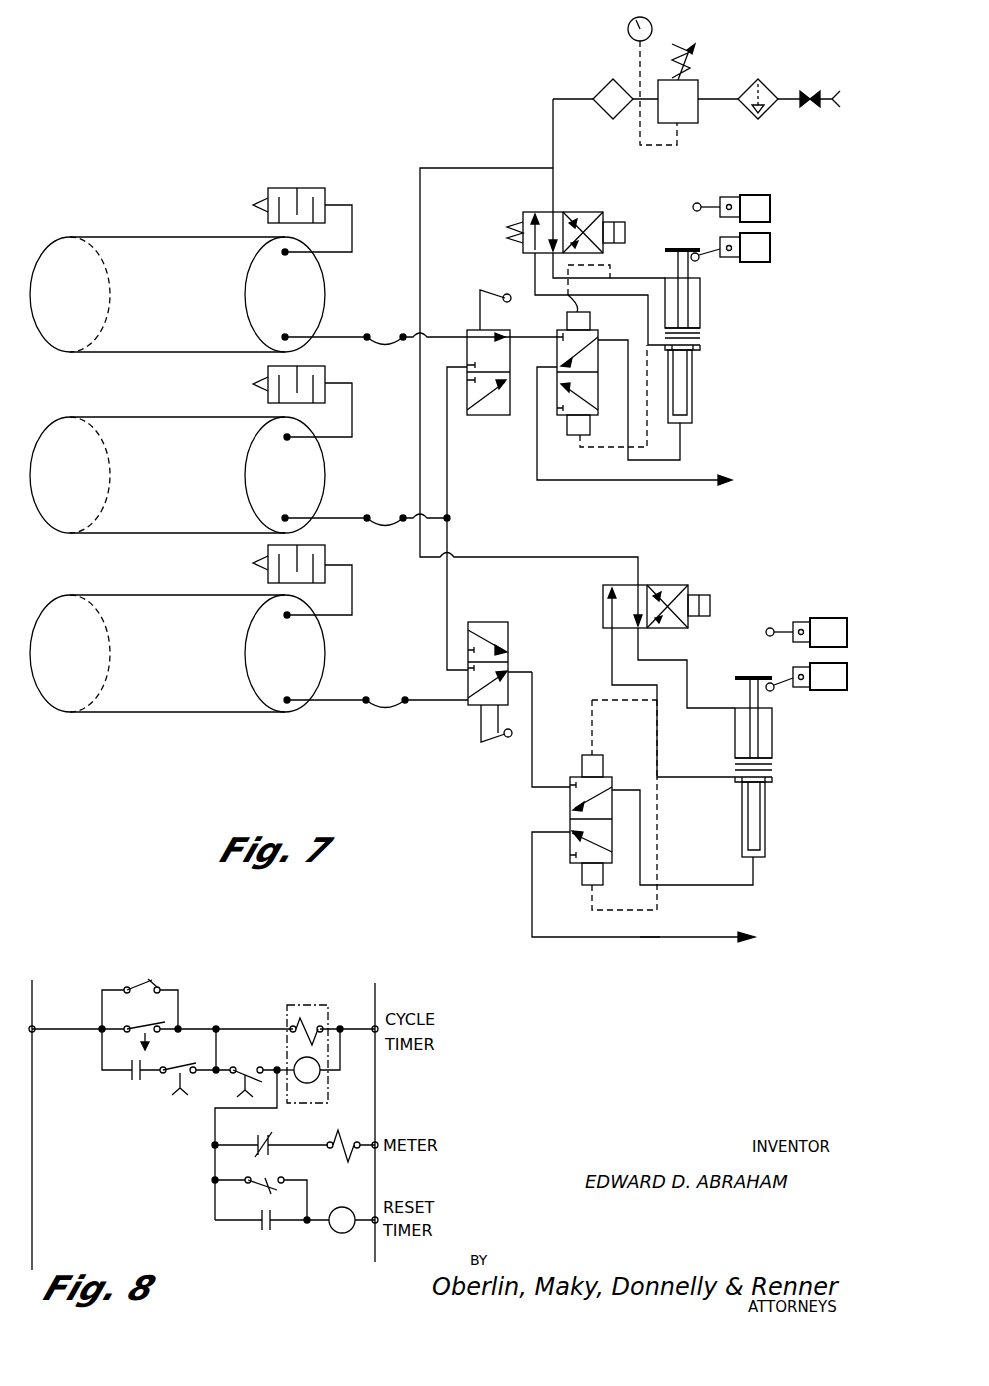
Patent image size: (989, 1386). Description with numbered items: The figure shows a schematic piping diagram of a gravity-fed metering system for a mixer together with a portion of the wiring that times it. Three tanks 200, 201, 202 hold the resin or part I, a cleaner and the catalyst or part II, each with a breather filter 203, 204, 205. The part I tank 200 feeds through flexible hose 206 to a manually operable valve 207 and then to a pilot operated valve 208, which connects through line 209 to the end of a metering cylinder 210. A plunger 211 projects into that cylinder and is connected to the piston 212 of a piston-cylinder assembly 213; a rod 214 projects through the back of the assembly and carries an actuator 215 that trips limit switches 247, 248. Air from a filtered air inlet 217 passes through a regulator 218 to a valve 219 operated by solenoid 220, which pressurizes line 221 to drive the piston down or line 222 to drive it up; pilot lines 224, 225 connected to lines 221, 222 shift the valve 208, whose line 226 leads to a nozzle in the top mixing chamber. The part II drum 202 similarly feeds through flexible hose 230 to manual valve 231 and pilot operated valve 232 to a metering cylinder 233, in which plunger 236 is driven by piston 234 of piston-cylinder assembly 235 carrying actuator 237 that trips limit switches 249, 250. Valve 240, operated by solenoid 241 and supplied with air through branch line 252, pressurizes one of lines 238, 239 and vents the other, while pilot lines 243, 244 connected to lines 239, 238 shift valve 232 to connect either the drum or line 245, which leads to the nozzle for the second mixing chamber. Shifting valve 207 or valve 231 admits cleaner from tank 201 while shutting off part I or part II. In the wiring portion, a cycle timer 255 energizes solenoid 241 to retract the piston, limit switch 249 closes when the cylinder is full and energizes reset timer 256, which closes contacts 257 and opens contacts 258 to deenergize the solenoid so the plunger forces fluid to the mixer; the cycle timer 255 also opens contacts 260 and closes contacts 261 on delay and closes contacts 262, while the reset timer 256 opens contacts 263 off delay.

In FIG. 7, the tank 200 is at (135, 237).
In FIG. 7, the tank 201 is at (160, 417).
In FIG. 7, the tank 202 is at (143, 595).
In FIG. 7, the breather filter 203 is at (318, 188).
In FIG. 7, the breather filter 204 is at (310, 366).
In FIG. 7, the breather filter 205 is at (318, 545).
In FIG. 7, the flexible hose 206 is at (380, 330).
In FIG. 7, the manually operable valve 207 is at (487, 415).
In FIG. 7, the pilot operated valve 208 is at (615, 318).
In FIG. 7, the line 209 is at (680, 452).
In FIG. 7, the metering cylinder 210 is at (692, 405).
In FIG. 7, the plunger 211 is at (683, 383).
In FIG. 7, the piston 212 is at (700, 333).
In FIG. 7, the piston-cylinder assembly 213 is at (700, 310).
In FIG. 7, the rod 214 is at (700, 290).
In FIG. 7, the actuator 215 is at (670, 248).
In FIG. 7, the filtered air inlet 217 is at (812, 85).
In FIG. 7, the regulator 218 is at (700, 78).
In FIG. 7, the valve 219 is at (578, 212).
In FIG. 7, the solenoid 220 is at (618, 222).
In FIG. 7, the line 221 is at (642, 278).
In FIG. 7, the line 222 is at (545, 297).
In FIG. 7, the pilot line 224 is at (568, 292).
In FIG. 7, the pilot line 225 is at (597, 447).
In FIG. 7, the line 226 is at (655, 480).
In FIG. 7, the flexible hose 230 is at (385, 712).
In FIG. 7, the manually operable valve 231 is at (495, 622).
In FIG. 7, the pilot operated valve 232 is at (570, 795).
In FIG. 7, the metering cylinder 233 is at (765, 815).
In FIG. 7, the piston 234 is at (765, 765).
In FIG. 7, the piston-cylinder assembly 235 is at (772, 740).
In FIG. 7, the plunger 236 is at (755, 835).
In FIG. 7, the actuator 237 is at (748, 676).
In FIG. 7, the line 238 is at (612, 660).
In FIG. 7, the line 239 is at (693, 627).
In FIG. 7, the valve 240 is at (665, 585).
In FIG. 7, the solenoid 241 is at (703, 595).
In FIG. 8, the solenoid 241 is at (345, 1130).
In FIG. 7, the pilot line 243 is at (620, 730).
In FIG. 7, the pilot line 244 is at (625, 912).
In FIG. 7, the line 245 is at (660, 940).
In FIG. 7, the limit switch 247 is at (770, 205).
In FIG. 7, the limit switch 248 is at (770, 247).
In FIG. 7, the limit switch 249 is at (830, 618).
In FIG. 8, the limit switch 249 is at (265, 1178).
In FIG. 7, the limit switch 250 is at (830, 690).
In FIG. 8, the limit switch 250 is at (150, 982).
In FIG. 7, the branch line 252 is at (418, 465).
In FIG. 8, the cycle timer 255 is at (318, 1005).
In FIG. 8, the reset timer 256 is at (342, 1233).
In FIG. 8, the contacts 257 is at (265, 1232).
In FIG. 8, the contacts 258 is at (268, 1135).
In FIG. 8, the contacts 260 is at (182, 1066).
In FIG. 8, the contacts 261 is at (250, 1068).
In FIG. 8, the contacts 262 is at (133, 1082).
In FIG. 8, the contacts 263 is at (140, 1025).